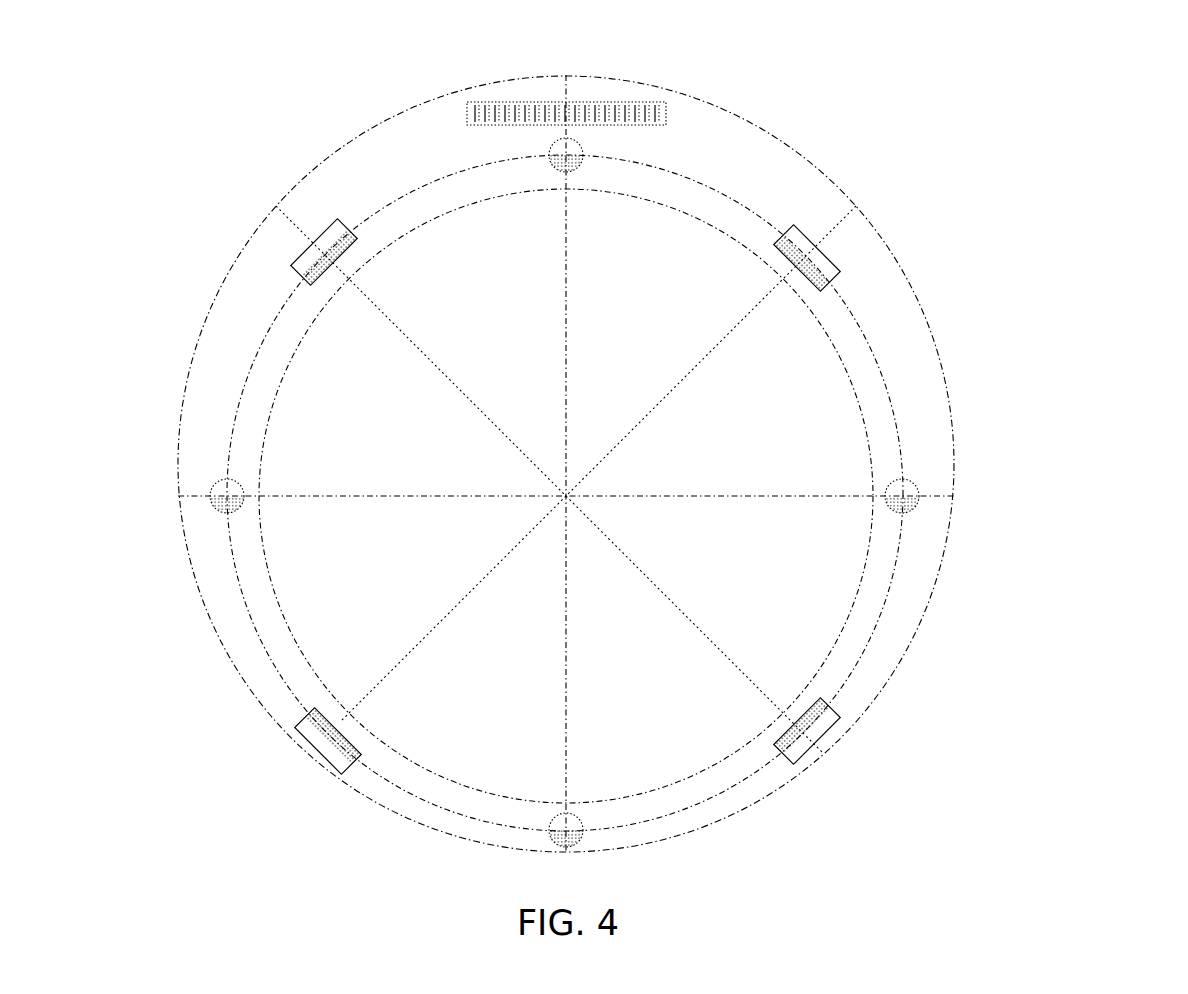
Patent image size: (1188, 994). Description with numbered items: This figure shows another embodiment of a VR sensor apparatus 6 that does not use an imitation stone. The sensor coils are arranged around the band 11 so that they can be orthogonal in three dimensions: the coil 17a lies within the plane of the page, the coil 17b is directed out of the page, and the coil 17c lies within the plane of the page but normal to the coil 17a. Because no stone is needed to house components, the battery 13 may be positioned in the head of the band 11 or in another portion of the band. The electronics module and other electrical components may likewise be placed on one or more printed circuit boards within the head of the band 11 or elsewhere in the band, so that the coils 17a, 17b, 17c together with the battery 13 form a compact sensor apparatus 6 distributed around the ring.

The VR sensor apparatus 6 is at (263, 67).
The band 11 is at (204, 322).
The battery 13 is at (672, 113).
The coil 17a is at (829, 258).
The coil 17b is at (900, 472).
The coil 17c is at (837, 710).